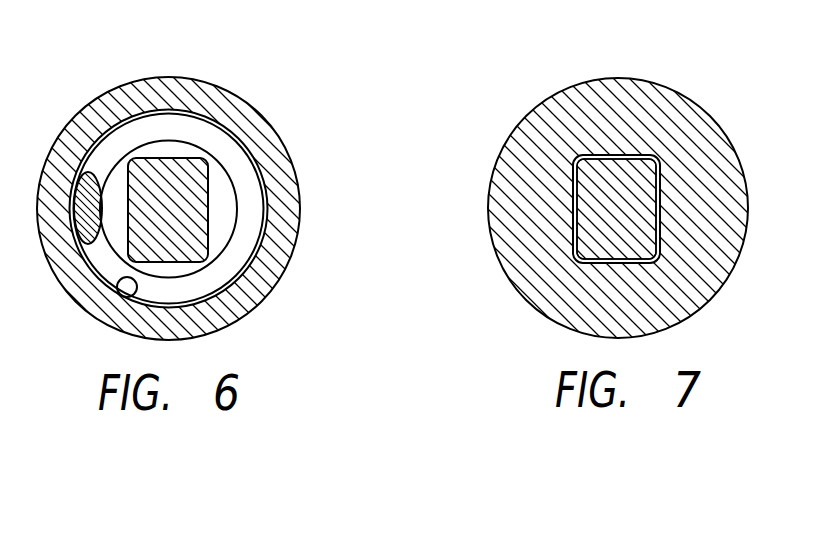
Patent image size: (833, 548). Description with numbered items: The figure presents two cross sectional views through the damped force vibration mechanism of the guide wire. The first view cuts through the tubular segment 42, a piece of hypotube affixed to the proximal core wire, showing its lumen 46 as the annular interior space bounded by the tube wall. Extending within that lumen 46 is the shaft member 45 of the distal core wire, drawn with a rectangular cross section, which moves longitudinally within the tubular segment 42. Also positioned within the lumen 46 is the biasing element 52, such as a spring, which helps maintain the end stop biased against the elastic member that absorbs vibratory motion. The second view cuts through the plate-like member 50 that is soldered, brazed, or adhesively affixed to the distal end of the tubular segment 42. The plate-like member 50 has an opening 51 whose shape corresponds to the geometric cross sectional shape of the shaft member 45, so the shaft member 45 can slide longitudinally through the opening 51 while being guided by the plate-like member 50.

In FIG. 6, the tubular segment 42 is at (233, 103).
In FIG. 6, the biasing element 52 is at (248, 174).
In FIG. 6, the shaft member 45 is at (197, 230).
In FIG. 7, the shaft member 45 is at (642, 186).
In FIG. 6, the lumen 46 is at (130, 281).
In FIG. 7, the plate-like member 50 is at (710, 252).
In FIG. 7, the opening 51 is at (575, 217).